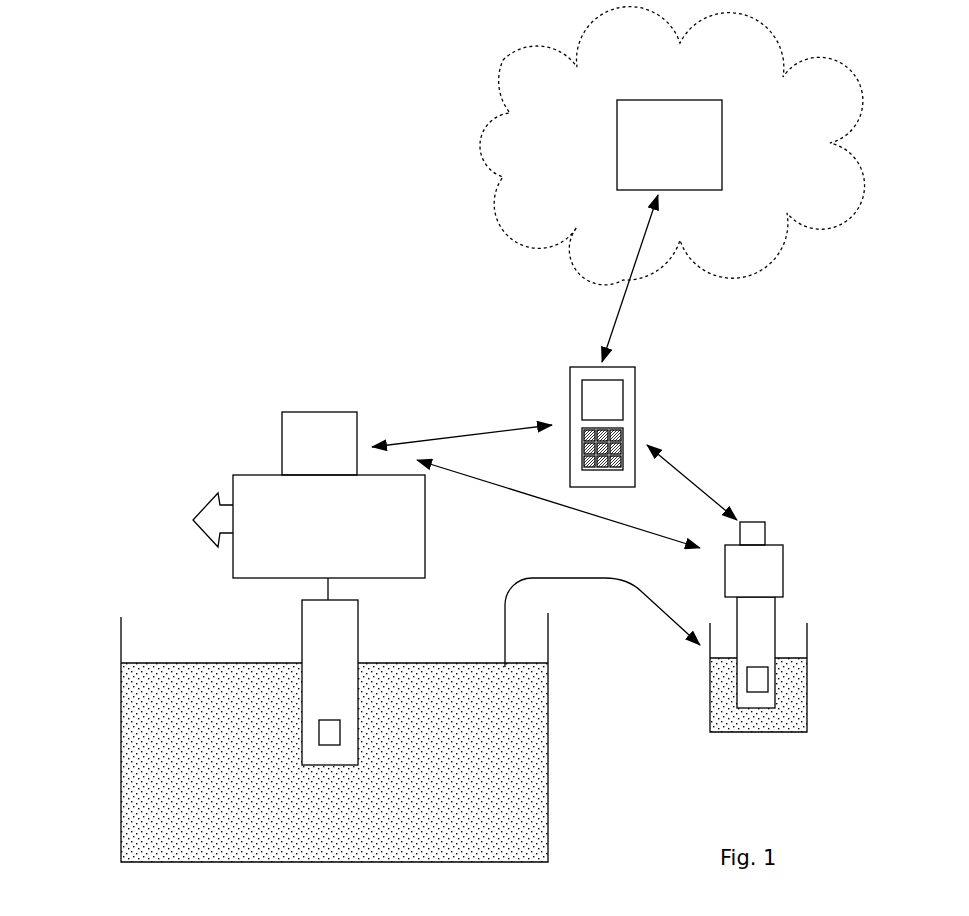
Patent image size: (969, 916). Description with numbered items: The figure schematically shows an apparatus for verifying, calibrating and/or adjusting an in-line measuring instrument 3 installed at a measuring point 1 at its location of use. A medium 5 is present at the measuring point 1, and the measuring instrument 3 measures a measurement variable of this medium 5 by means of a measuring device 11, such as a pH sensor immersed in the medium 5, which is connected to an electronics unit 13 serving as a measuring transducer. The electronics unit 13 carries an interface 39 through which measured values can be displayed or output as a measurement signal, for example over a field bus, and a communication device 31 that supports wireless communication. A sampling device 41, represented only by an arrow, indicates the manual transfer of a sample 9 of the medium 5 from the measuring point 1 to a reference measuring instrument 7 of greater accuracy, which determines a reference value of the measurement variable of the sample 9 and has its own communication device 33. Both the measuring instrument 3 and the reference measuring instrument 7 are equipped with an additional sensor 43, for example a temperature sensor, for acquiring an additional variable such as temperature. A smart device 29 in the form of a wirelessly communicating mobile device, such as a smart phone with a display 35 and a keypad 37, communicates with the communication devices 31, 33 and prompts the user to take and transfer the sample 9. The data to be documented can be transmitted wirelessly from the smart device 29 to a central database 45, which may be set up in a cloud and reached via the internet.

The measuring point 1 is at (97, 650).
The measuring instrument 3 is at (278, 467).
The medium 5 is at (334, 762).
The reference measuring instrument 7 is at (801, 579).
The sample 9 is at (727, 708).
The measuring device 11 is at (330, 645).
The electronics unit 13 is at (329, 526).
The smart device 29 is at (600, 427).
The communication device 31 is at (319, 443).
The communication device 33 is at (750, 537).
The display 35 is at (602, 400).
The keypad 37 is at (625, 440).
The interface 39 is at (222, 545).
The sampling device 41 is at (553, 580).
The additional sensor 43 is at (333, 735).
The central database 45 is at (669, 145).